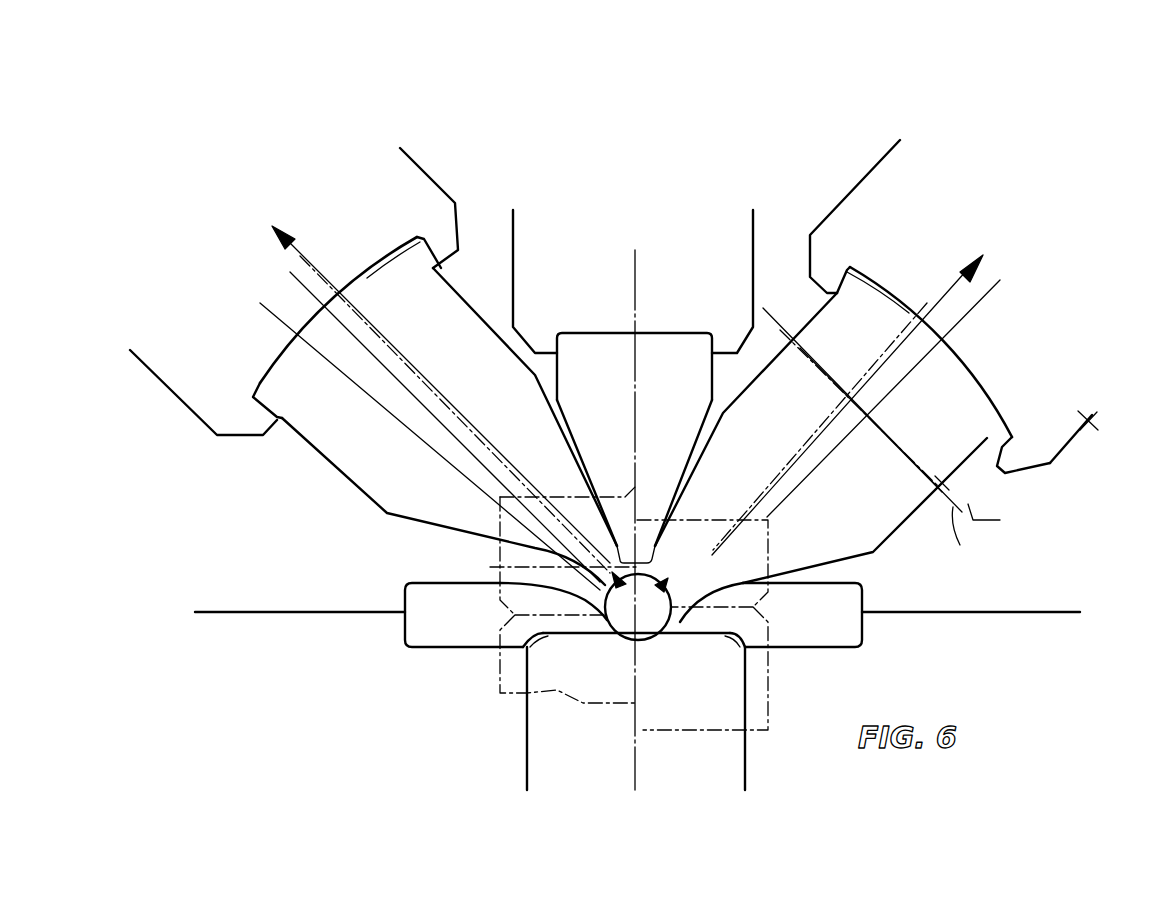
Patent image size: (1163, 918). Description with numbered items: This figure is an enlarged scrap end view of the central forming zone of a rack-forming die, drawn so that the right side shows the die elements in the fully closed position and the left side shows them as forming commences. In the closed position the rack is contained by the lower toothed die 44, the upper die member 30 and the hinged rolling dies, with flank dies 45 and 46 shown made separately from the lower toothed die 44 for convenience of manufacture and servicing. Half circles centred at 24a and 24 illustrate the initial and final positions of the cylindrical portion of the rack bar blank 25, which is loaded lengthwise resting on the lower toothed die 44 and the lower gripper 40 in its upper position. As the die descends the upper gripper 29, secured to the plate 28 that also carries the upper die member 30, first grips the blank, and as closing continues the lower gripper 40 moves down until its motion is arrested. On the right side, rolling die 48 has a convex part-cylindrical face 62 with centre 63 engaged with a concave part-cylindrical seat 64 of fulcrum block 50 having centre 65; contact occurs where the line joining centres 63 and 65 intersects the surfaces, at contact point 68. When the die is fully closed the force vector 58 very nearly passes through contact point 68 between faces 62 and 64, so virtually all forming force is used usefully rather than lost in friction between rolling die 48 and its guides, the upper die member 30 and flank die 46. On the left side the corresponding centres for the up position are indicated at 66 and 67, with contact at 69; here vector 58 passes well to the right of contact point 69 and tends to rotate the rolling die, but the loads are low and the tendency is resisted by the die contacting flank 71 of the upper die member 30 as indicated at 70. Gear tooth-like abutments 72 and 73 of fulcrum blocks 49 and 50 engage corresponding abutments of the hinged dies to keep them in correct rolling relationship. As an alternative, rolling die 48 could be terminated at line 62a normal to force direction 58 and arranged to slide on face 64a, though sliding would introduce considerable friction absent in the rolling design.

The final centre of cylindrical portion of rack bar blank 24 is at (700, 638).
The initial centre of cylindrical portion of rack bar blank 24a is at (547, 633).
The rack bar blank 25 is at (653, 640).
The plate 28 is at (733, 255).
The upper gripper 29 is at (578, 488).
The upper die member 30 is at (578, 340).
The lower gripper 40 is at (592, 713).
The lower toothed die 44 is at (537, 760).
The flank die 45 is at (423, 615).
The flank die 46 is at (840, 593).
The rolling die 48 is at (910, 483).
The fulcrum block 49 is at (190, 388).
The fulcrum block 50 is at (1100, 422).
The force vector 58 is at (290, 238).
The convex part-cylindrical face 62 is at (987, 393).
The terminating line of rolling die 62a is at (960, 545).
The centre of convex face 63 is at (673, 552).
The concave part-cylindrical seat 64 is at (1007, 403).
The sliding face 64a is at (1000, 520).
The centre of concave seat 65 is at (660, 632).
The centre for up position 66 is at (585, 575).
The centre for up position 67 is at (620, 620).
The contact point 68 is at (913, 307).
The contact point 69 is at (293, 330).
The contact location 70 is at (636, 518).
The flank of upper die member 71 is at (562, 400).
The gear tooth-like abutment 72 is at (450, 224).
The gear tooth-like abutment 73 is at (432, 270).